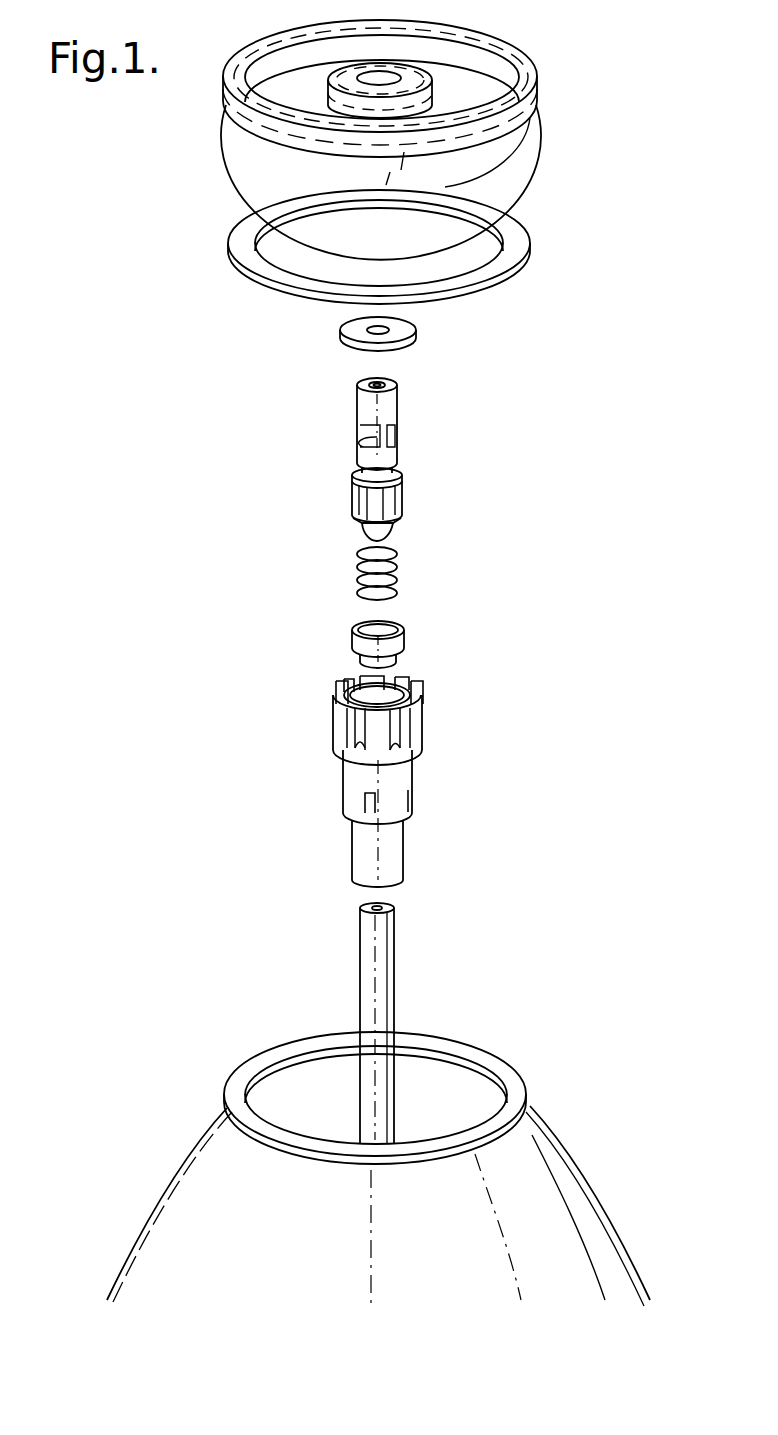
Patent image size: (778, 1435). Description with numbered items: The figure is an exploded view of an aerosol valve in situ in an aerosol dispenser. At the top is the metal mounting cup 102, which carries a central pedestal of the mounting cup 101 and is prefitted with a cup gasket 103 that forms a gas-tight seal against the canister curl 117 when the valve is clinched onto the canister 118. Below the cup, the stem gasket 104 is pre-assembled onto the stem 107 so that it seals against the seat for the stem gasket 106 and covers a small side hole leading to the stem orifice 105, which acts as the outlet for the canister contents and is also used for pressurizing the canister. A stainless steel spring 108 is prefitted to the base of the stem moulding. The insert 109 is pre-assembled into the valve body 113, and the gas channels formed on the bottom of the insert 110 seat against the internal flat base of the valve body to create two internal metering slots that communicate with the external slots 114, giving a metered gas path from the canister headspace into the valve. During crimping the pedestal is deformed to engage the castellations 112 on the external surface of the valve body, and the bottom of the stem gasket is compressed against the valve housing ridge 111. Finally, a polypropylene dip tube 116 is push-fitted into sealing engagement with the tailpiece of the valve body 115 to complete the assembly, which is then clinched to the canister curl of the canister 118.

The pedestal of the mounting cup 101 is at (327, 78).
The mounting cup 102 is at (527, 54).
The cup gasket 103 is at (533, 236).
The stem gasket 104 is at (425, 332).
The stem orifice 105 is at (375, 383).
The seat for the stem gasket 106 is at (360, 472).
The stem 107 is at (382, 448).
The spring 108 is at (356, 562).
The insert 109 is at (417, 631).
The gas channels on the bottom of the insert 110 is at (399, 650).
The valve housing ridge 111 is at (350, 677).
The castellations 112 is at (382, 715).
The valve body 113 is at (398, 776).
The external slots 114 is at (362, 795).
The tailpiece of the valve body 115 is at (366, 846).
The dip tube 116 is at (397, 958).
The canister curl 117 is at (494, 1057).
The canister 118 is at (591, 1170).